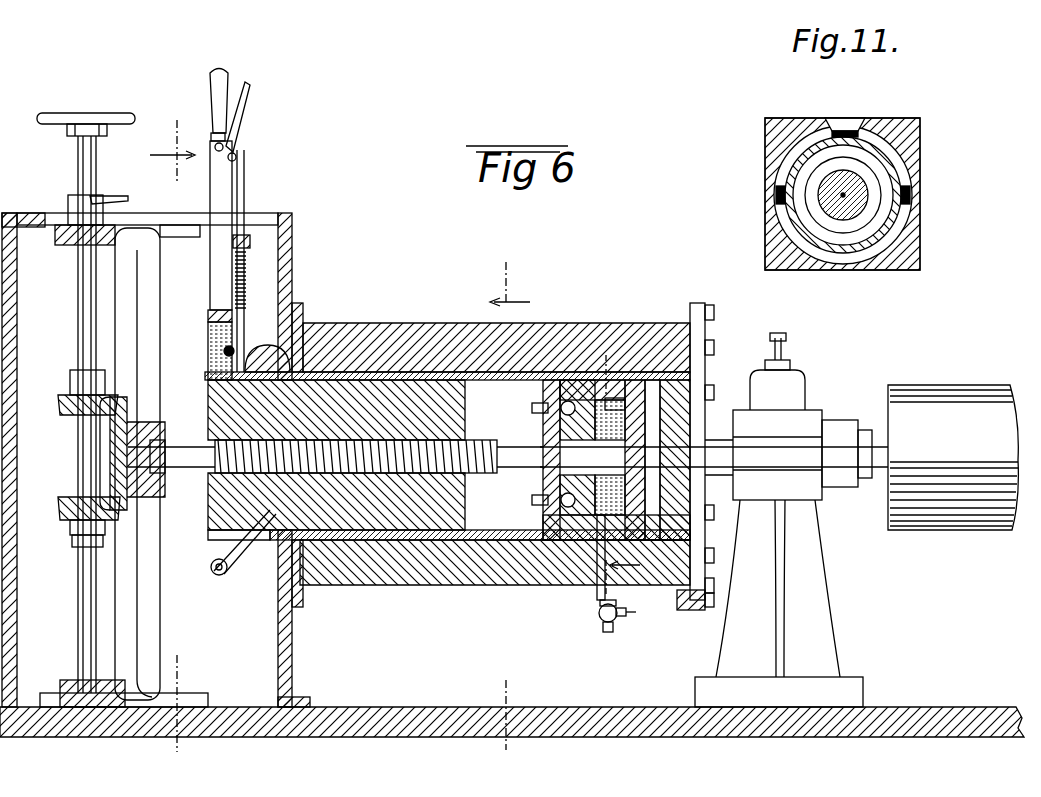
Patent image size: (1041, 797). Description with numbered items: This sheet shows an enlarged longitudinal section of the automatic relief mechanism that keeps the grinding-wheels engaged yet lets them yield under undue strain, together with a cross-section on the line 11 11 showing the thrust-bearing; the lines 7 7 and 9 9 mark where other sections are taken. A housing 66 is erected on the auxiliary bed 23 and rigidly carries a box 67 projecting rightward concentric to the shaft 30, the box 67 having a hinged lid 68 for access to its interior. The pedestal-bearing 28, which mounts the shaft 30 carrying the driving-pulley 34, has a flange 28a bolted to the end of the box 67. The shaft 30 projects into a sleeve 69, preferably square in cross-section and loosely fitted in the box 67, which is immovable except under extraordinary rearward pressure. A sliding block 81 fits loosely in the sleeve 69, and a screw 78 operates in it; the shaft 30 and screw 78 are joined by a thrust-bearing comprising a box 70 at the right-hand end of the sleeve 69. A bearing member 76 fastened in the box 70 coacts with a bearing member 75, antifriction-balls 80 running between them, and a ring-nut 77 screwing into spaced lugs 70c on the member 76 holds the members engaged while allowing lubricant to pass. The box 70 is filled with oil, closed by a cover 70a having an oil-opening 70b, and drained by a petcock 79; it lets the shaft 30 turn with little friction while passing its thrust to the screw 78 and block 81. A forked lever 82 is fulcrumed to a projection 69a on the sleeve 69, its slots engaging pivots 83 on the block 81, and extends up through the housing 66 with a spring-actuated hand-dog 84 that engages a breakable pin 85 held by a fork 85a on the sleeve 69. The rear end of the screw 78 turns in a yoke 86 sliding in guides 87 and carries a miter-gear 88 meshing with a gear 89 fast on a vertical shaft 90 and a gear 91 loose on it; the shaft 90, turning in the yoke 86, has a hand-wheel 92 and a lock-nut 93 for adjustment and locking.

In FIG. 6, the section line 7 7 is at (510, 505).
In FIG. 6, the section line 9 9 is at (172, 431).
In FIG. 6, the section line 11 11 is at (616, 461).
In FIG. 6, the auxiliary bed 23 is at (601, 714).
In FIG. 6, the pedestal-bearing 28 is at (783, 520).
In FIG. 6, the flange 28a is at (706, 318).
In FIG. 6, the shaft 30 is at (882, 470).
In FIG. 11, the shaft 30 is at (862, 192).
In FIG. 6, the driving-pulley 34 is at (953, 457).
In FIG. 6, the housing 66 is at (291, 649).
In FIG. 6, the box 67 is at (425, 570).
In FIG. 6, the hinged lid 68 is at (585, 380).
In FIG. 6, the sleeve 69 is at (517, 545).
In FIG. 6, the projection 69a is at (262, 538).
In FIG. 6, the box 70 is at (555, 545).
In FIG. 11, the box 70 is at (880, 215).
In FIG. 6, the cover 70a is at (672, 380).
In FIG. 11, the cover 70a is at (890, 124).
In FIG. 6, the oil-opening 70b is at (632, 380).
In FIG. 11, the oil-opening 70b is at (846, 126).
In FIG. 6, the lugs 70c is at (575, 380).
In FIG. 11, the lugs 70c is at (905, 200).
In FIG. 6, the bearing member 75 is at (615, 407).
In FIG. 6, the bearing member 76 is at (545, 487).
In FIG. 6, the ring-nut 77 is at (597, 545).
In FIG. 11, the ring-nut 77 is at (888, 180).
In FIG. 6, the screw 78 is at (485, 440).
In FIG. 6, the petcock 79 is at (617, 620).
In FIG. 6, the antifriction-balls 80 is at (534, 409).
In FIG. 6, the sliding block 81 is at (243, 544).
In FIG. 6, the forked lever 82 is at (210, 294).
In FIG. 6, the pivots 83 is at (215, 471).
In FIG. 6, the spring-actuated hand-dog 84 is at (244, 333).
In FIG. 6, the breakable pin 85 is at (226, 363).
In FIG. 6, the fork 85a is at (303, 331).
In FIG. 6, the yoke 86 is at (158, 586).
In FIG. 6, the guides 87 is at (177, 233).
In FIG. 6, the miter-gear 88 is at (108, 427).
In FIG. 6, the gear 89 is at (60, 405).
In FIG. 6, the vertical shaft 90 is at (92, 569).
In FIG. 6, the gear 91 is at (60, 507).
In FIG. 6, the hand-wheel 92 is at (60, 102).
In FIG. 6, the lock-nut 93 is at (92, 203).